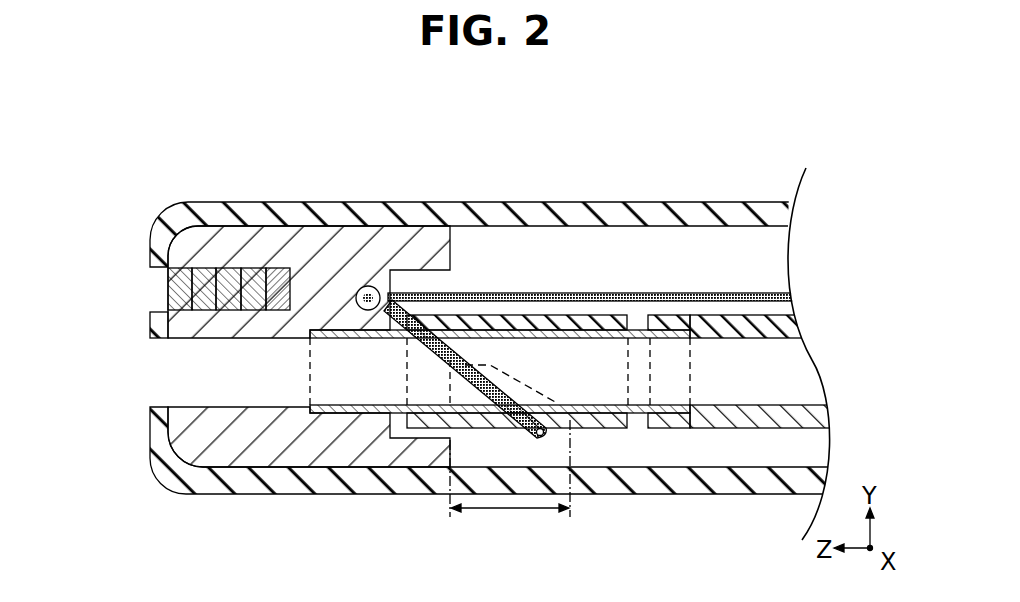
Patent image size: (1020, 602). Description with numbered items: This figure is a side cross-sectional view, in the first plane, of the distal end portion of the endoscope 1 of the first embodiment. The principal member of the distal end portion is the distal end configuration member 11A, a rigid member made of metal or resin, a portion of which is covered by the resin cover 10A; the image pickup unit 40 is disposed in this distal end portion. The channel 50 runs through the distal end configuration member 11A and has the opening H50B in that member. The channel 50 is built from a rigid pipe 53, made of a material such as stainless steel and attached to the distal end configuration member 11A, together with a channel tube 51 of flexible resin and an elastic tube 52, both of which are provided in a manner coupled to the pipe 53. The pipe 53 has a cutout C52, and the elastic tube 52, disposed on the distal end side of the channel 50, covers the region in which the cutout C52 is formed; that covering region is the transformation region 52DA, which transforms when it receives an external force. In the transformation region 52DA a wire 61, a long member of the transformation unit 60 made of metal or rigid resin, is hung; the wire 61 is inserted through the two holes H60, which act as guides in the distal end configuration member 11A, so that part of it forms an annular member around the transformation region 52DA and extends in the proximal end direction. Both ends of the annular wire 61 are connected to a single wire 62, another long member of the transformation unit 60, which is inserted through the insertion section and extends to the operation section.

The endoscope 1 is at (137, 153).
The resin cover 10A is at (677, 193).
The distal end configuration member 11A is at (270, 227).
The image pickup unit 40 is at (218, 268).
The holes H60 is at (372, 280).
The transformation unit 60 is at (629, 160).
The wire 61 is at (463, 355).
The wire 62 is at (587, 292).
The opening H50B is at (153, 373).
The channel 50 is at (695, 548).
The channel tube 51 is at (703, 424).
The elastic tube 52 is at (427, 424).
The pipe 53 is at (368, 418).
The cutout C52 is at (545, 411).
The transformation region 52DA is at (510, 483).